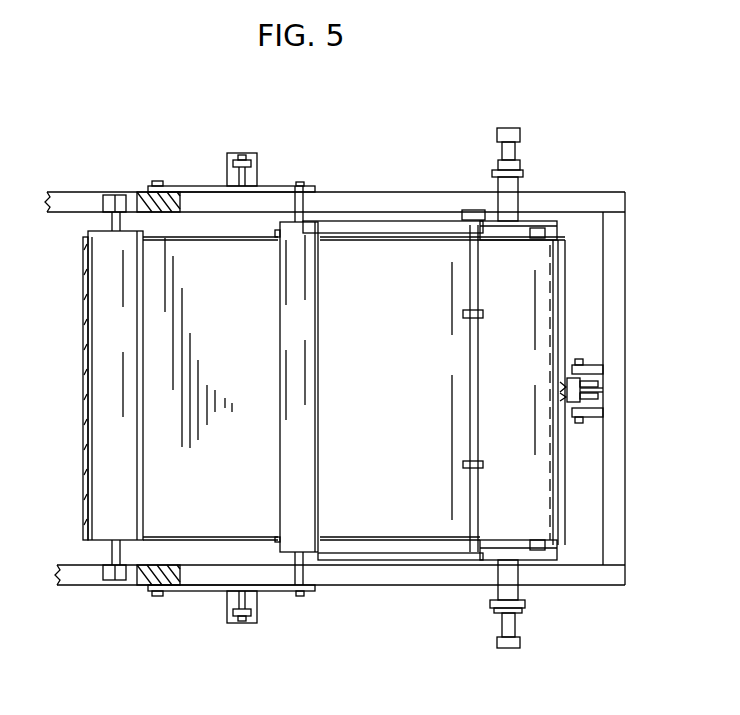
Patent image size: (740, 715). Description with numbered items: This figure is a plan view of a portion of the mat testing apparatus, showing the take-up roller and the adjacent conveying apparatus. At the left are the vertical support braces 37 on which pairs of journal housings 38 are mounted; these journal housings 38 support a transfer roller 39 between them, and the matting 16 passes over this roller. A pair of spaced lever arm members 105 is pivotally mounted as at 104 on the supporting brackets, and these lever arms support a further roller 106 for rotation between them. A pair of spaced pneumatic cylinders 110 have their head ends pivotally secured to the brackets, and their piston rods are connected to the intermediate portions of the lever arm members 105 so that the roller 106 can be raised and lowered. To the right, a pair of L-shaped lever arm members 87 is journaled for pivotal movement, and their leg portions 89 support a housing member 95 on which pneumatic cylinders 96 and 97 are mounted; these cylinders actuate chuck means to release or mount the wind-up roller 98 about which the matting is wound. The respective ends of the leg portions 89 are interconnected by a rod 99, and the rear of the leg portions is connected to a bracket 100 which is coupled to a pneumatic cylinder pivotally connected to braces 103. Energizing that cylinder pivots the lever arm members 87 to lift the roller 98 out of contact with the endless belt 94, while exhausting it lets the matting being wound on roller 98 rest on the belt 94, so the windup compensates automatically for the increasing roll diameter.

The belt 16 is at (83, 323).
The vertical support brace 37 is at (163, 210).
The journal housing 38 is at (108, 197).
The transfer roller 39 is at (102, 375).
The L-shaped lever arm member 87 is at (398, 221).
The leg portion 89 is at (538, 221).
The endless belt 94 is at (377, 543).
The housing member 95 is at (510, 195).
The pneumatic cylinder 96 is at (508, 150).
The pneumatic cylinder 97 is at (515, 623).
The wind-up roller 98 is at (520, 542).
The rod 99 is at (473, 398).
The bracket 100 is at (592, 392).
The brace 103 is at (590, 368).
The pivot mounting 104 is at (157, 181).
The lever arm member 105 is at (200, 186).
The idler roller 106 is at (290, 342).
The pneumatic cylinder 110 is at (250, 153).